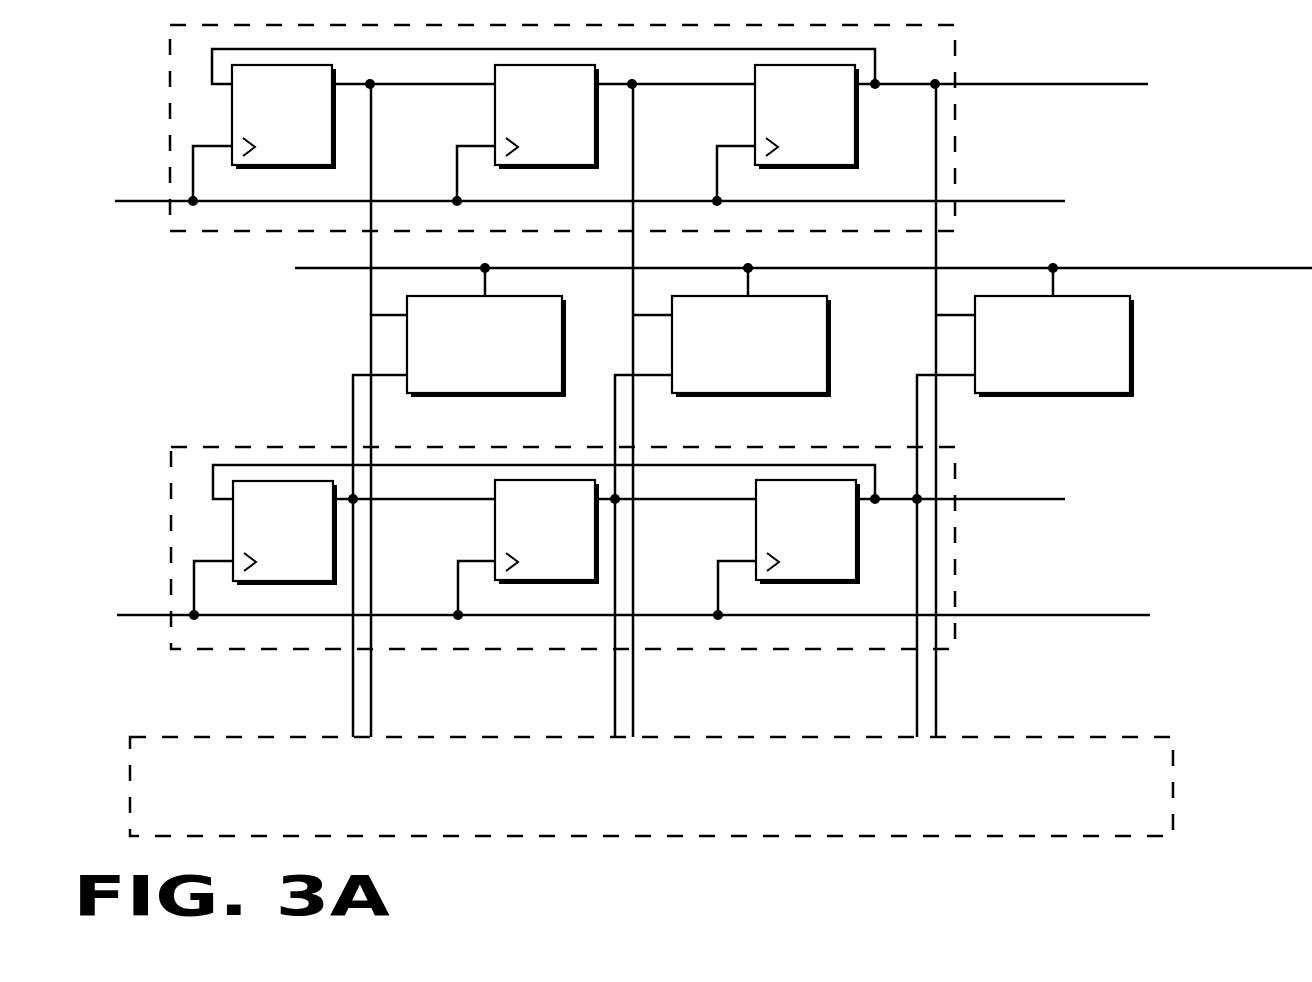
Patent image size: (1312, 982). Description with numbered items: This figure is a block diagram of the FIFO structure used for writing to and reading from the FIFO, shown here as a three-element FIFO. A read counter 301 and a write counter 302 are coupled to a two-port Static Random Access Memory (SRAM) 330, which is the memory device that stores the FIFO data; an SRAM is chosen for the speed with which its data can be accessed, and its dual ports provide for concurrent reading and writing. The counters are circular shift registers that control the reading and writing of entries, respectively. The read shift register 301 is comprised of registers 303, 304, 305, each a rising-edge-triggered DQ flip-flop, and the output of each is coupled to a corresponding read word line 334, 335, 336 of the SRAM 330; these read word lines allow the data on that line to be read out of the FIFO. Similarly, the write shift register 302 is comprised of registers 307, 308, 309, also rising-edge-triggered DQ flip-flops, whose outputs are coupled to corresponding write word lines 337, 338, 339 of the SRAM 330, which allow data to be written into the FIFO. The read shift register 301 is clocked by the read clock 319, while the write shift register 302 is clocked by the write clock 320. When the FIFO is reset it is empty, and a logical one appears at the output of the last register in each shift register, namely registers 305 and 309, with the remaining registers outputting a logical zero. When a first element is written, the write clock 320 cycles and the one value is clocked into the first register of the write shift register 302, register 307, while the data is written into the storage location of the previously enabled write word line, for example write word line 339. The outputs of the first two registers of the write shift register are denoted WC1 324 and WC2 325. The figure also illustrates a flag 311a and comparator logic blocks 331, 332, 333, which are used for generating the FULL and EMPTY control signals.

The read counter 301 is at (902, 225).
The write counter 302 is at (902, 643).
The register 303 is at (324, 158).
The register 304 is at (587, 158).
The register 305 is at (847, 158).
The register 307 is at (325, 573).
The register 308 is at (587, 573).
The register 309 is at (848, 573).
The flag 311a is at (332, 271).
The read clock 319 is at (148, 199).
The write clock 320 is at (148, 614).
The WC1 324 is at (391, 88).
The WC2 325 is at (652, 88).
The two-port Static Random Access Memory (SRAM) 330 is at (634, 806).
The comparator logic block 331 is at (524, 388).
The comparator logic block 332 is at (788, 388).
The comparator logic block 333 is at (1093, 388).
The read word line 334 is at (938, 731).
The read word line 335 is at (634, 731).
The read word line 336 is at (372, 731).
The write word line 337 is at (352, 731).
The write word line 338 is at (614, 731).
The write word line 339 is at (916, 731).